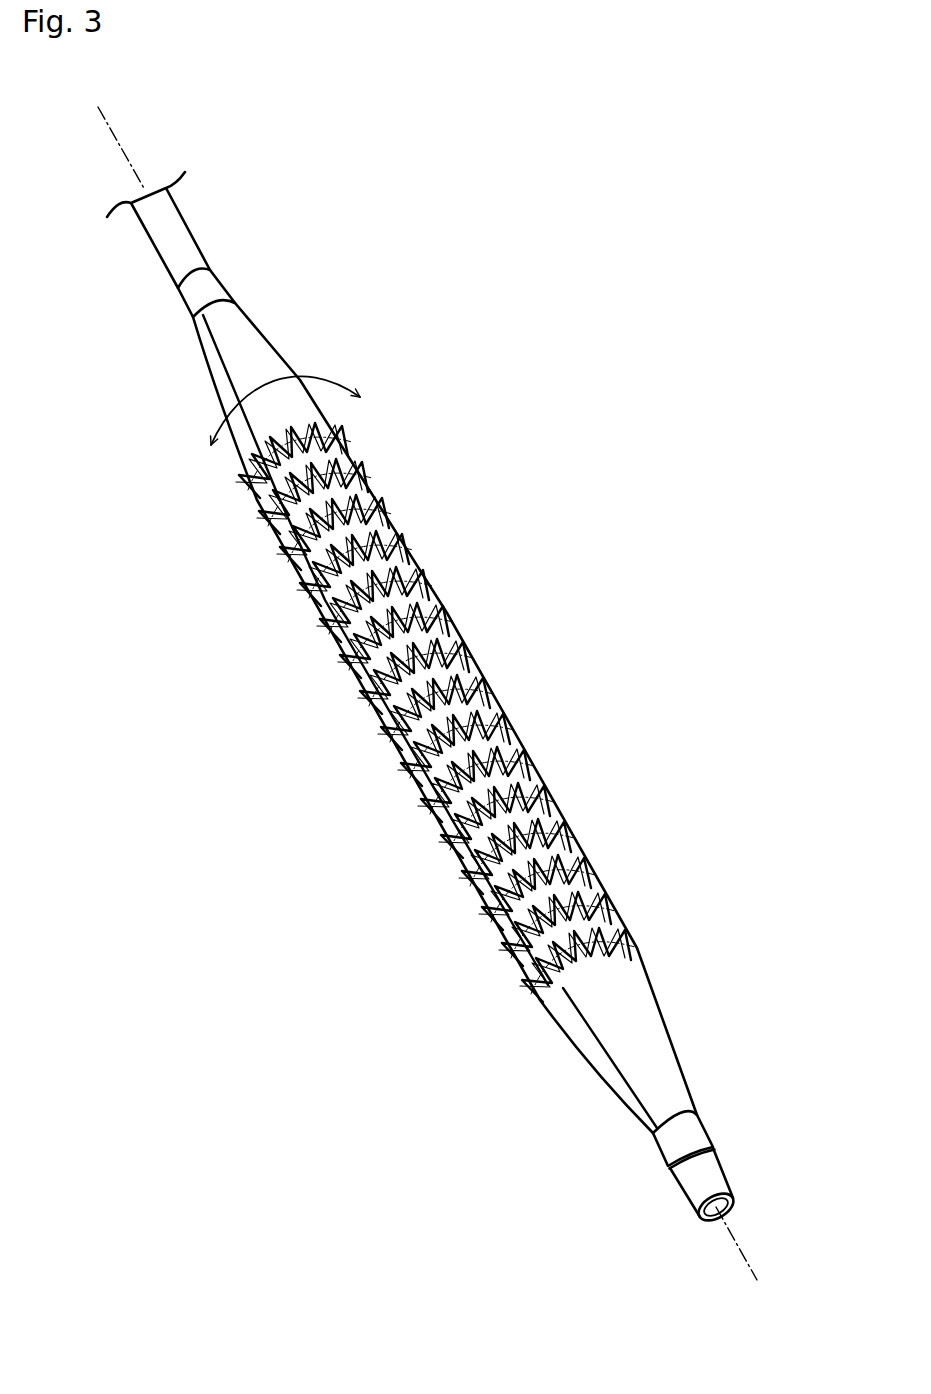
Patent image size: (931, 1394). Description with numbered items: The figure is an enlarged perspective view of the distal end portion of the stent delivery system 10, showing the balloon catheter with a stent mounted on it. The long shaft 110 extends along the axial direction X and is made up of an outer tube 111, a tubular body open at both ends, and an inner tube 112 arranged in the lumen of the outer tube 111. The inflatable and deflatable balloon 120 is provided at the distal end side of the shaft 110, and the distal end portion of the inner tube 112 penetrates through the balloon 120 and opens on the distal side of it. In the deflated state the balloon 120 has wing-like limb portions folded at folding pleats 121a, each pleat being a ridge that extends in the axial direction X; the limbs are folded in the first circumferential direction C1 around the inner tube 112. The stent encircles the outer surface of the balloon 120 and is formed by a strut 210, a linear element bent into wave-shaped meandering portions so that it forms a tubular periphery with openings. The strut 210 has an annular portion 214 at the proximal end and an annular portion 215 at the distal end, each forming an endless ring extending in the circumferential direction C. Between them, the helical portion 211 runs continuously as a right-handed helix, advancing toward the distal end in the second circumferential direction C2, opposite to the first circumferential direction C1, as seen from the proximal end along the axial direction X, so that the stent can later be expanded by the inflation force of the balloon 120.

The stent delivery system 10 is at (53, 82).
The shaft 110 is at (213, 193).
The outer tube 111 is at (203, 270).
The inner tube 112 is at (718, 1172).
The balloon 120 is at (272, 347).
The folding pleat 121a is at (570, 990).
The strut 210 is at (150, 657).
The helical portion 211 is at (383, 727).
The annular portion 214 is at (257, 482).
The annular portion 215 is at (527, 975).
The circumferential direction C is at (324, 376).
The first circumferential direction C1 is at (373, 405).
The second circumferential direction C2 is at (211, 457).
The axial direction X is at (123, 150).